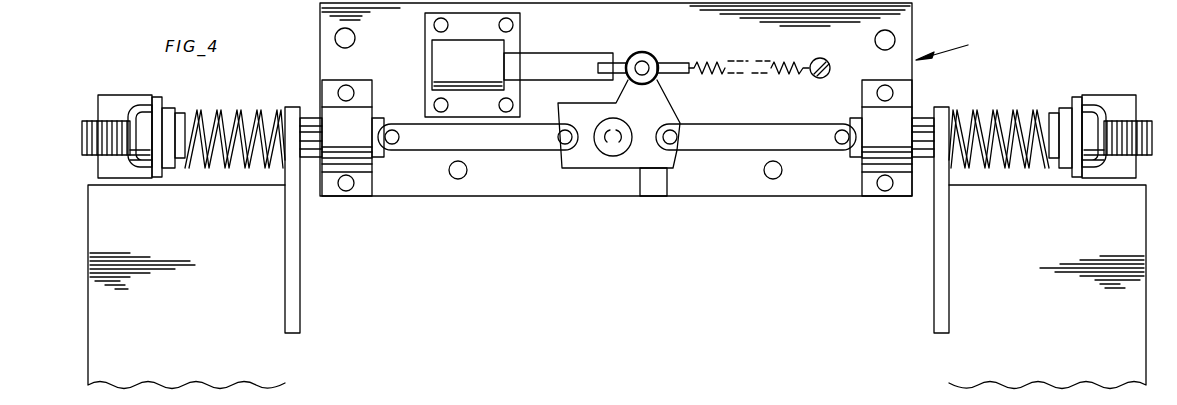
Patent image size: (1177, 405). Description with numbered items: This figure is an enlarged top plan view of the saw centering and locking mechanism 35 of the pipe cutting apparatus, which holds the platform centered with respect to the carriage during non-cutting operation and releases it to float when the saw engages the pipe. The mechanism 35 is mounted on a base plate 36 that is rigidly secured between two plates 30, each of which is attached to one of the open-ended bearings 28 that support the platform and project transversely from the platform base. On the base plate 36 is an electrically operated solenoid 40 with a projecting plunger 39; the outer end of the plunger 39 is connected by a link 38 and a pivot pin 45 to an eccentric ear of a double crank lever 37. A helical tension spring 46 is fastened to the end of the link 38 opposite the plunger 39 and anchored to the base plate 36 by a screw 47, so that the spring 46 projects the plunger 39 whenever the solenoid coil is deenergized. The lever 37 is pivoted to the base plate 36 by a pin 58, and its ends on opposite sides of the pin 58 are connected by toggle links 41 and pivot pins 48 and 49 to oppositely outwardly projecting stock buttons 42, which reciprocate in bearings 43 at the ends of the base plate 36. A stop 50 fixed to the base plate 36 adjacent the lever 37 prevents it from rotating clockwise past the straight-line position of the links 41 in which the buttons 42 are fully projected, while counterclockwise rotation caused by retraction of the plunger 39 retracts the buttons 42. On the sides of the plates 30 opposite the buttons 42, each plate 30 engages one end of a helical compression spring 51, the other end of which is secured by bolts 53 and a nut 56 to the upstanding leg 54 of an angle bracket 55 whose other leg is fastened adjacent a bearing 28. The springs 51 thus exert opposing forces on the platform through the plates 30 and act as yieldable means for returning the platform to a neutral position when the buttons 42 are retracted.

The open-ended bearing 28 is at (246, 257).
The plate 30 is at (293, 238).
The saw centering and locking mechanism 35 is at (955, 48).
The base plate 36 is at (398, 66).
The double crank lever 37 is at (648, 102).
The link 38 is at (658, 66).
The plunger 39 is at (559, 62).
The solenoid 40 is at (479, 64).
The toggle link 41 is at (524, 142).
The stock button 42 is at (310, 120).
The bearing 43 is at (356, 133).
The pivot pin 45 is at (645, 66).
The helical tension spring 46 is at (792, 64).
The screw 47 is at (821, 78).
The pivot pin 48 is at (565, 150).
The pivot pin 49 is at (392, 146).
The stop 50 is at (655, 190).
The helical compression spring 51 is at (210, 114).
The bolt 53 is at (92, 122).
The upstanding leg 54 is at (158, 101).
The angle bracket 55 is at (122, 105).
The nut 56 is at (145, 152).
The pin 58 is at (610, 140).